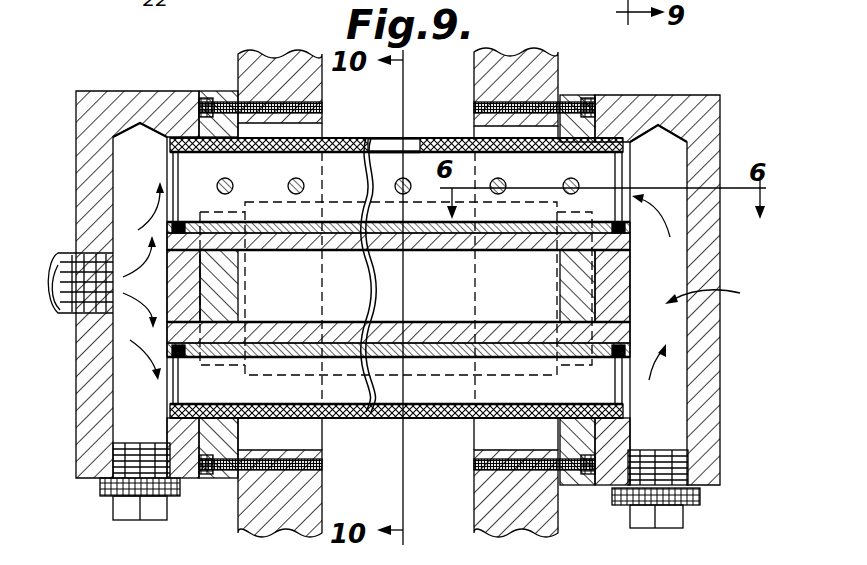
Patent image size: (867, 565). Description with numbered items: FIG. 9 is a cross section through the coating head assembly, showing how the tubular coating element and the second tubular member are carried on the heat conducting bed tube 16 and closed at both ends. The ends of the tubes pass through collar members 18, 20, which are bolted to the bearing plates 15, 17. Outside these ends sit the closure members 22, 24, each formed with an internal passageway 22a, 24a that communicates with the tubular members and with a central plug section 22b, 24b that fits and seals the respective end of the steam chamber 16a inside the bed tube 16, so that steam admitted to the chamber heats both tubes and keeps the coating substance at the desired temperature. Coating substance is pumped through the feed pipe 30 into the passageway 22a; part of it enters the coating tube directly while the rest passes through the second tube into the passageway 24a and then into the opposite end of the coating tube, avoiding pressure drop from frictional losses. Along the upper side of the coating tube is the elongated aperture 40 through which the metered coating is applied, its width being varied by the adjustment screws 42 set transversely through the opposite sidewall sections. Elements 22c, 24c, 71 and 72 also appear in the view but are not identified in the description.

The bearing plate 15 is at (284, 62).
The bed tube 16 is at (437, 250).
The steam chamber 16a is at (375, 418).
The bearing plate 17 is at (546, 62).
The collar member 18 is at (214, 98).
The collar member 20 is at (580, 100).
The closure member 22 is at (108, 100).
The internal passageway 22a is at (128, 182).
The central plug section 22b is at (145, 336).
The fitting 22c is at (118, 500).
The closure member 24 is at (700, 100).
The internal passageway 24a is at (712, 332).
The central plug section 24b is at (612, 273).
The fitting 24c is at (688, 500).
The feed pipe 30 is at (70, 314).
The aperture 40 is at (384, 139).
The adjustment screw 42 is at (238, 184).
The upper seal 71 is at (441, 138).
The lower seal 72 is at (441, 418).